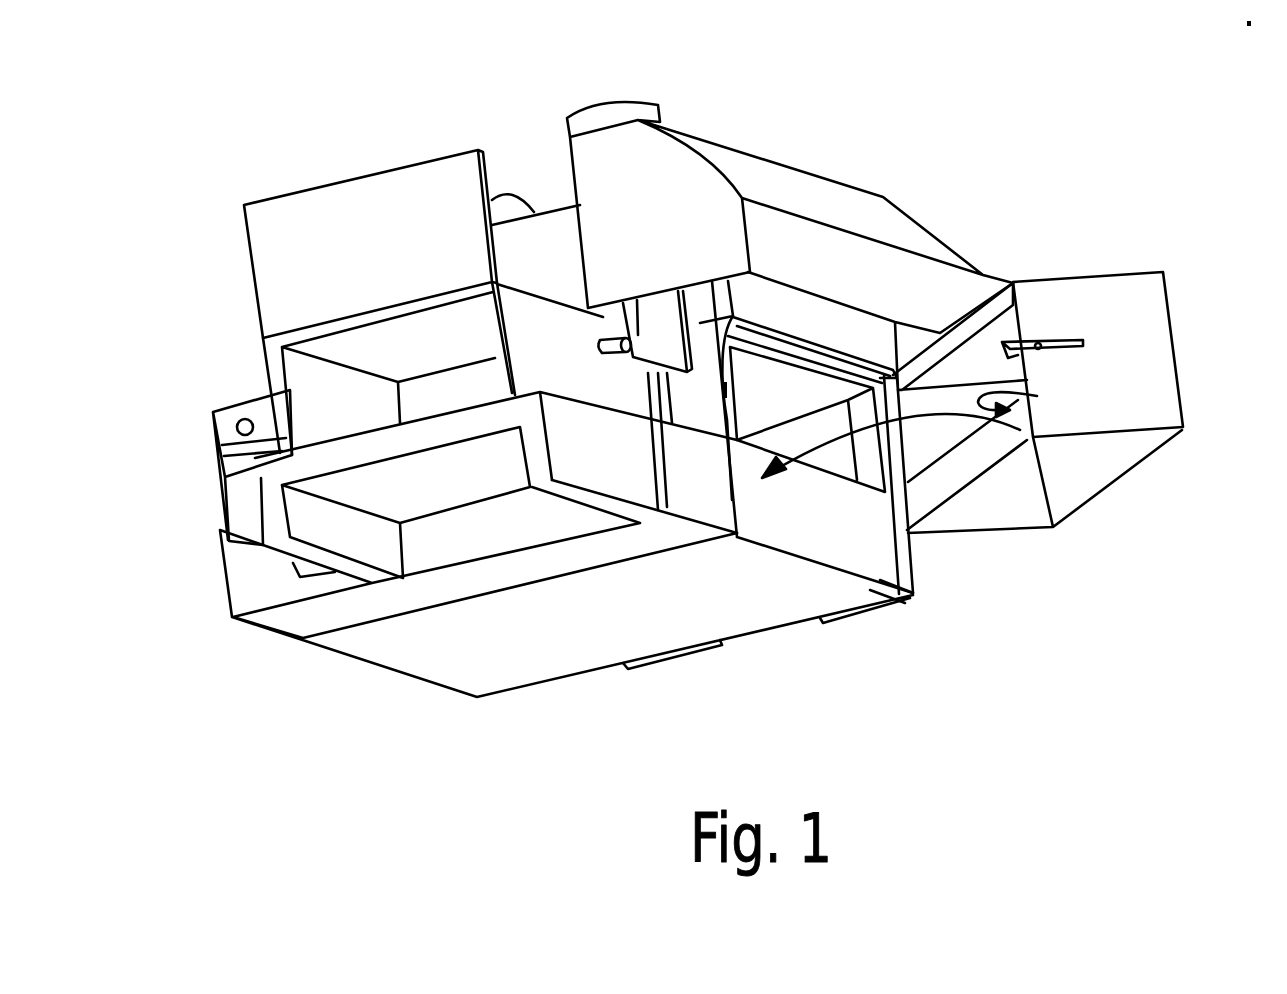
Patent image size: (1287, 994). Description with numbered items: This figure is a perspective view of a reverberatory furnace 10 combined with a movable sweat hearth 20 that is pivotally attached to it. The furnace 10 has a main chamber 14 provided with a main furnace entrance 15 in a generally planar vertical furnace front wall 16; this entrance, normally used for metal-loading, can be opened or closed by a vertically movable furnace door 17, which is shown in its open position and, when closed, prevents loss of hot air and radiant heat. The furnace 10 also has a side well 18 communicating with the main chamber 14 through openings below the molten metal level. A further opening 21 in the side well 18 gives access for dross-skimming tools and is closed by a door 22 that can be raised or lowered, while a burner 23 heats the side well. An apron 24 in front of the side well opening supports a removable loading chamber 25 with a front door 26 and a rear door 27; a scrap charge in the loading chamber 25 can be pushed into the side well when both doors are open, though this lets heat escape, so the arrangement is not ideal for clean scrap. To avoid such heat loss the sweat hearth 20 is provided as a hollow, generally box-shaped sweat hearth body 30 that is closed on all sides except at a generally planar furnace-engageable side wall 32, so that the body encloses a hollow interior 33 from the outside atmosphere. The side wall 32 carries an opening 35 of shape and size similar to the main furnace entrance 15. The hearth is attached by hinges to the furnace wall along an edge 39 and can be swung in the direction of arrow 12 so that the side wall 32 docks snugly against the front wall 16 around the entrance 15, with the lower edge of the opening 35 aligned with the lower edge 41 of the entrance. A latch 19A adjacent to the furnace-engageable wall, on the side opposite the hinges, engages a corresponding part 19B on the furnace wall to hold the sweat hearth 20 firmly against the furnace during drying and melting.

The reverberatory furnace 10 is at (352, 142).
The arrow 12 is at (860, 433).
The main chamber 14 is at (538, 610).
The main furnace entrance 15 is at (808, 389).
The furnace front wall 16 is at (882, 563).
The furnace door 17 is at (835, 316).
The side well 18 is at (665, 533).
The latch 19A is at (1043, 340).
The corresponding part 19B is at (722, 321).
The sweat hearth 20 is at (1109, 240).
The further opening 21 is at (640, 383).
The door 22 is at (652, 313).
The burner 23 is at (610, 356).
The apron 24 is at (400, 482).
The loading chamber 25 is at (297, 384).
The front door 26 is at (547, 223).
The rear door 27 is at (262, 261).
The sweat hearth body 30 is at (1150, 375).
The furnace-engageable side wall 32 is at (998, 303).
The hollow interior 33 is at (1025, 395).
The opening 35 is at (942, 465).
The edge 39 is at (900, 517).
The lower edge 41 is at (748, 448).